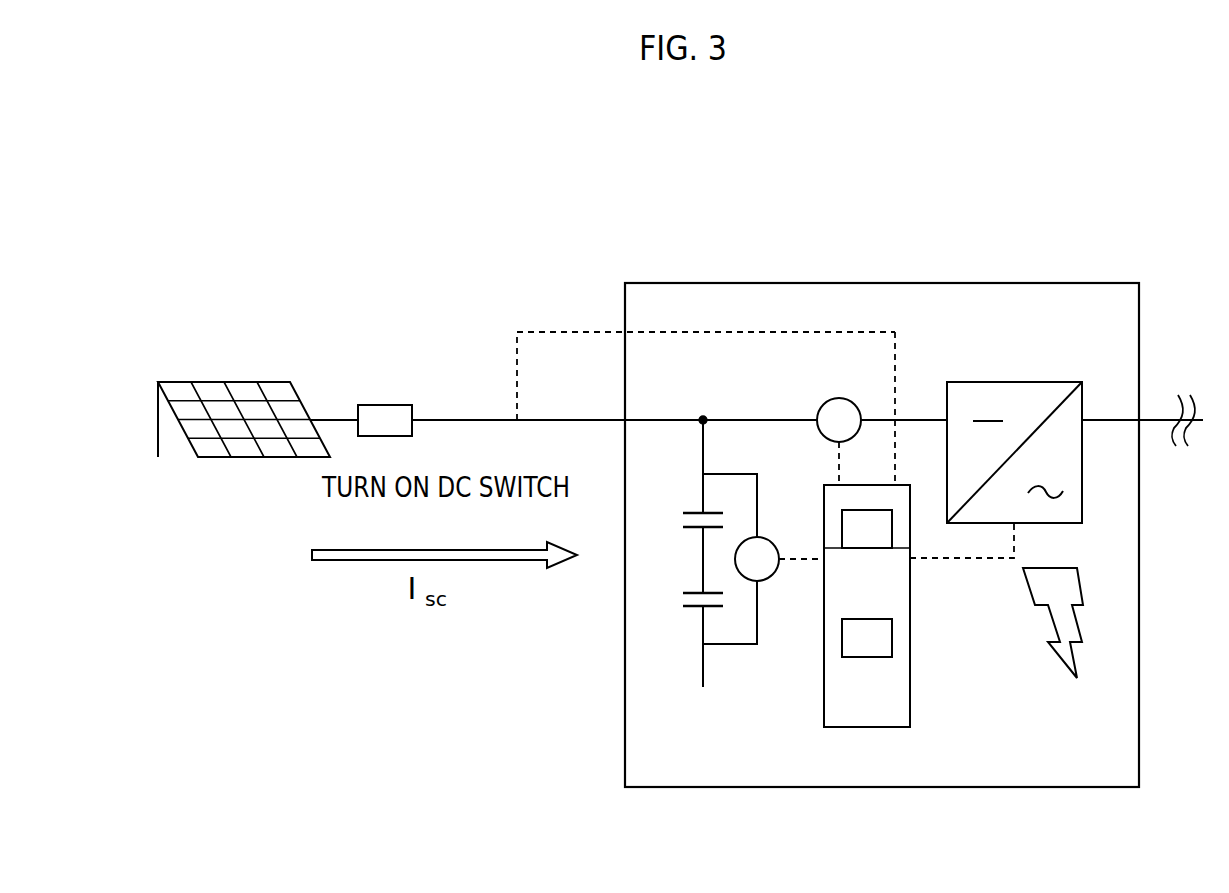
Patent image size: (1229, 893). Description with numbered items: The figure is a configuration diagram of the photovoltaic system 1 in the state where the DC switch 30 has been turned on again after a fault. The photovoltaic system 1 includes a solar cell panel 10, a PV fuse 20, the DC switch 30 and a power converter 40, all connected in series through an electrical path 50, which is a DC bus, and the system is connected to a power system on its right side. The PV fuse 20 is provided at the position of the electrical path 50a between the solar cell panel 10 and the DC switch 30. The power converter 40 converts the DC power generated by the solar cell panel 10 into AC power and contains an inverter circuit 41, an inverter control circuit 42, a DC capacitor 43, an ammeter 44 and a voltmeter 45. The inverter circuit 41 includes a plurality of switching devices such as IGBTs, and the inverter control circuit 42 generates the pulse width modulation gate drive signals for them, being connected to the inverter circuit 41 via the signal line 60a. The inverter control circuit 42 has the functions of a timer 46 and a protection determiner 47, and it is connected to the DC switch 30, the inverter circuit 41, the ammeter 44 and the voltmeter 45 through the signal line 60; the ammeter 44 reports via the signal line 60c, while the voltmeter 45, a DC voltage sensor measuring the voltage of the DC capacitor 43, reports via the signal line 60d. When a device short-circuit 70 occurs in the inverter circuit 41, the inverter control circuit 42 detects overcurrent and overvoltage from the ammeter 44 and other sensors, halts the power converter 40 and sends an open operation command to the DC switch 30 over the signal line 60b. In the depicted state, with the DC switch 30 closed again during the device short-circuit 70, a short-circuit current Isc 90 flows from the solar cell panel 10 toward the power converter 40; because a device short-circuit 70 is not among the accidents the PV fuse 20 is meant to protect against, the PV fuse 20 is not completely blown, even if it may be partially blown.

The photovoltaic system 1 is at (1053, 265).
The solar cell panel 10 is at (200, 382).
The PV fuse 20 is at (385, 404).
The DC switch 30 is at (503, 418).
The power converter 40 is at (660, 283).
The inverter circuit 41 is at (1015, 382).
The inverter control circuit 42 is at (899, 606).
The DC capacitor 43 is at (692, 528).
The ammeter 44 is at (829, 403).
The voltmeter 45 is at (768, 582).
The timer 46 is at (872, 548).
The protection determiner 47 is at (870, 658).
The electrical path 50 is at (585, 422).
The electrical path position 50a is at (338, 418).
The signal line 60 is at (762, 431).
The signal line 60a is at (957, 559).
The signal line 60b is at (548, 332).
The signal line 60c is at (838, 471).
The signal line 60d is at (803, 558).
The device short-circuit 70 is at (1060, 657).
The short-circuit current Isc 90 is at (343, 561).